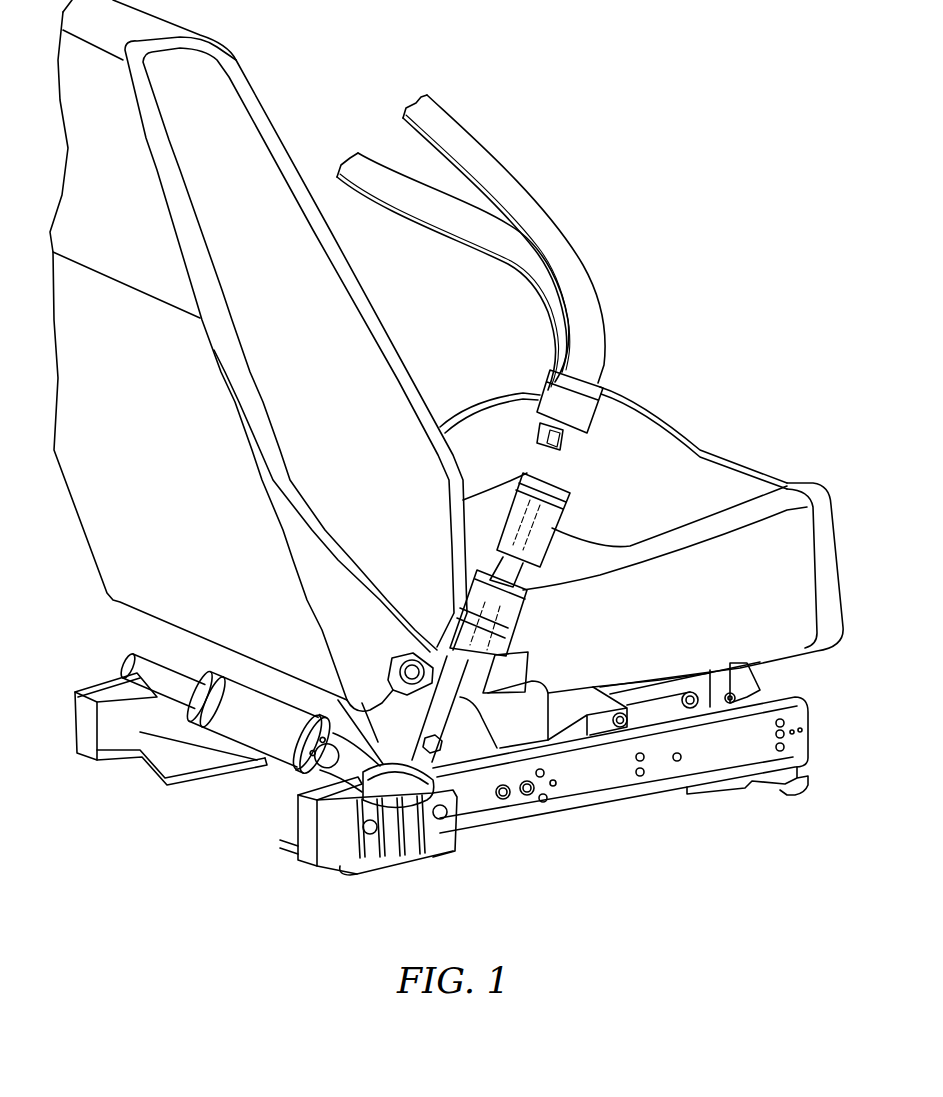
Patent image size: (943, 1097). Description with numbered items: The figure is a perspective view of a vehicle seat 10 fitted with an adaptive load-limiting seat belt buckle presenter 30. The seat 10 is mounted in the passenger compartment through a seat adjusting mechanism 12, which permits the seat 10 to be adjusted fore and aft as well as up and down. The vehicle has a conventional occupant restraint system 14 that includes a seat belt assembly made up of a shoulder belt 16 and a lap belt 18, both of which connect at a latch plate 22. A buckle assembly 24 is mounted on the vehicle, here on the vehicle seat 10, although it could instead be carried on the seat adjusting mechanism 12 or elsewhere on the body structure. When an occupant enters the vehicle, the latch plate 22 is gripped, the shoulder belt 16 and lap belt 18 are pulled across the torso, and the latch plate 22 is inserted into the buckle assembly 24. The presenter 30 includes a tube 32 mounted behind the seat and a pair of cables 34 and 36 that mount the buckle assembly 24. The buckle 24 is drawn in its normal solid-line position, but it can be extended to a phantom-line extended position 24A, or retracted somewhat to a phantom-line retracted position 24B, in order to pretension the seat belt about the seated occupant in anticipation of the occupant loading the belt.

The vehicle seat 10 is at (238, 147).
The seat adjusting mechanism 12 is at (603, 770).
The occupant restraint system 14 is at (508, 242).
The shoulder belt 16 is at (530, 205).
The lap belt 18 is at (452, 222).
The latch plate 22 is at (582, 407).
The buckle assembly 24 is at (503, 607).
The extended position of buckle 24A is at (567, 531).
The retracted position of buckle 24B is at (432, 657).
The adaptive load-limiting seat belt buckle presenter 30 is at (240, 717).
The tube 32 is at (268, 730).
The cable 34 is at (500, 778).
The cable 36 is at (468, 697).